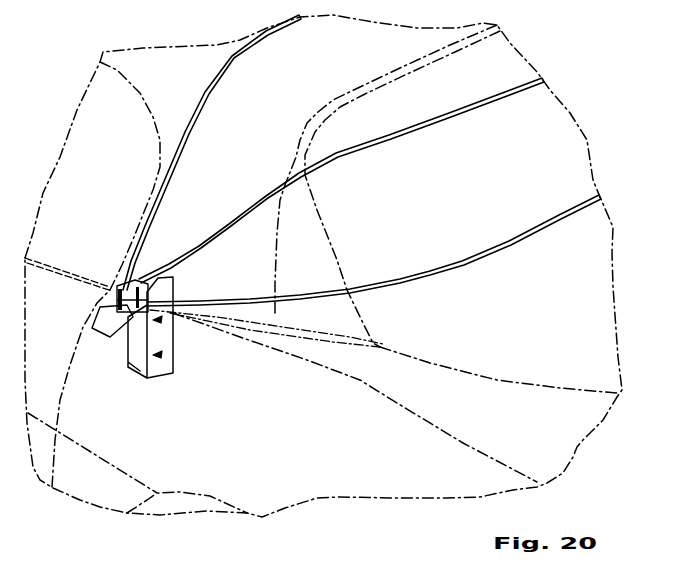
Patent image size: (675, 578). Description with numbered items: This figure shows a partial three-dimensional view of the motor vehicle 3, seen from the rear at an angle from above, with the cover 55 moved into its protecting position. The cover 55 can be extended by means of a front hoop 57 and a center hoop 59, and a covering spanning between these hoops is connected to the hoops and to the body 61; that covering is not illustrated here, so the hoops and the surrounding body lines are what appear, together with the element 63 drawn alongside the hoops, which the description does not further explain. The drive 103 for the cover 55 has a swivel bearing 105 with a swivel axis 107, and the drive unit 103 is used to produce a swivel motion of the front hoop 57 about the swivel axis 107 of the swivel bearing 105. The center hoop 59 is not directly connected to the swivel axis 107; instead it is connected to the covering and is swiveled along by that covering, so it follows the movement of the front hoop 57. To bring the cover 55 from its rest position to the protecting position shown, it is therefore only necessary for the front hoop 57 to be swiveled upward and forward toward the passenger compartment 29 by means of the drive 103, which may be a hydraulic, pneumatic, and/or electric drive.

The motor vehicle 3 is at (397, 468).
The passenger compartment 29 is at (83, 186).
The cover 55 is at (218, 335).
The front hoop 57 is at (208, 93).
The center hoop 59 is at (376, 140).
The body 61 is at (361, 373).
The lower guide rail 63 is at (463, 263).
The drive 103 is at (140, 368).
The swivel bearing 105 is at (106, 271).
The swivel axis 107 is at (150, 286).